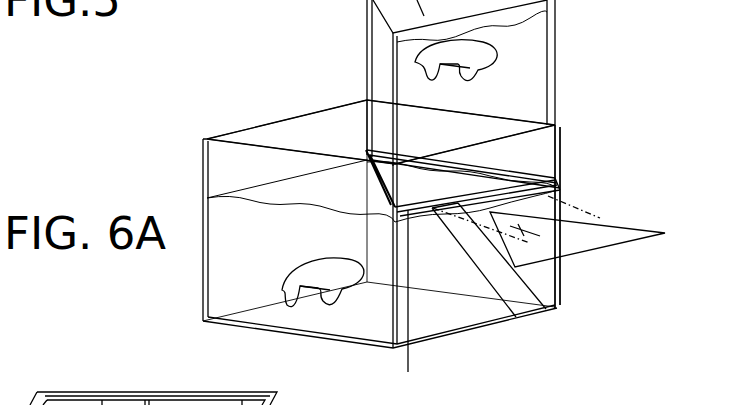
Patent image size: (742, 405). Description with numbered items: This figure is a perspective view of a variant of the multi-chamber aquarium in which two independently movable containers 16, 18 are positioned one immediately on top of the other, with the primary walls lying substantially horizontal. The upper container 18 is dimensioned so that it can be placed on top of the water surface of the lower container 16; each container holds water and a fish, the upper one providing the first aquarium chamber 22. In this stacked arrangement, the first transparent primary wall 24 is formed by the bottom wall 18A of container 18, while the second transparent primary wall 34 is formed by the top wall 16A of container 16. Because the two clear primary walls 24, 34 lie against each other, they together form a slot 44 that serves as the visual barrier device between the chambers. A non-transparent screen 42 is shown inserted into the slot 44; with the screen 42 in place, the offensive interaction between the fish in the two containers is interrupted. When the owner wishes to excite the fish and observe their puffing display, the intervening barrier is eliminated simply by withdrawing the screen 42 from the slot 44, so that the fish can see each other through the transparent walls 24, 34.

The container 16 is at (232, 131).
The top wall of container 16 16A is at (545, 302).
The container 18 is at (555, 38).
The bottom wall of container 18 18A is at (507, 173).
The first aquarium chamber 22 is at (327, 133).
The first transparent primary wall 24 is at (513, 318).
The second transparent primary wall 34 is at (528, 172).
The non-transparent screen 42 is at (603, 242).
The slot 44 is at (408, 372).